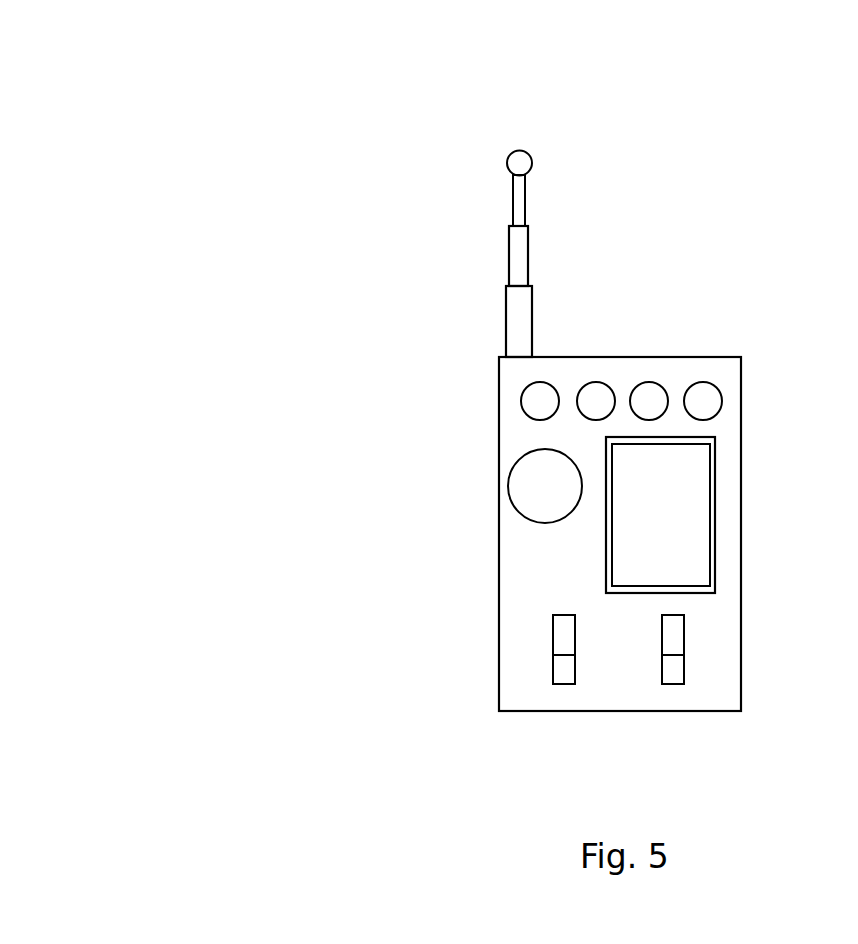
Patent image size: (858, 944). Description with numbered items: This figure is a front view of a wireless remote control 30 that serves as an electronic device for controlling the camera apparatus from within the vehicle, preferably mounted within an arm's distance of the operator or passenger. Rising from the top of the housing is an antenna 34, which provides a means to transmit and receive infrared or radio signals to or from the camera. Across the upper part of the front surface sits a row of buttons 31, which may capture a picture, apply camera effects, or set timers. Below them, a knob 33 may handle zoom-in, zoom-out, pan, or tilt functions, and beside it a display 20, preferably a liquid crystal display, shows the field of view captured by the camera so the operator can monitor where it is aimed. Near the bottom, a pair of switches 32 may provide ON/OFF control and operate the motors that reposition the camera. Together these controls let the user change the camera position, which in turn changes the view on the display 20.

The remote control 30 is at (143, 126).
The antenna 34 is at (519, 256).
The buttons 31 is at (702, 400).
The knob 33 is at (514, 470).
The display 20 is at (716, 490).
The switches 32 is at (670, 642).